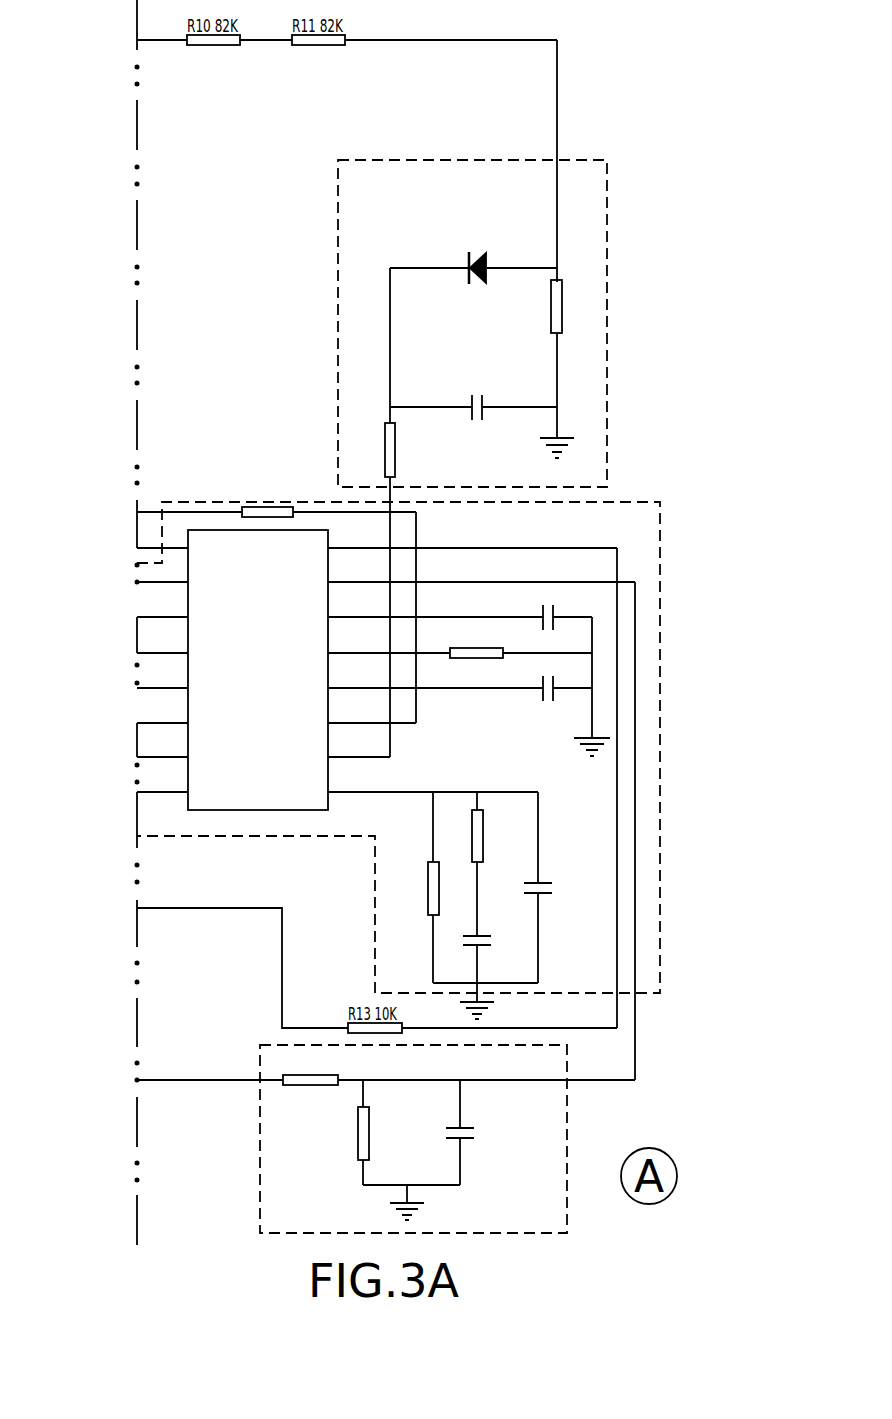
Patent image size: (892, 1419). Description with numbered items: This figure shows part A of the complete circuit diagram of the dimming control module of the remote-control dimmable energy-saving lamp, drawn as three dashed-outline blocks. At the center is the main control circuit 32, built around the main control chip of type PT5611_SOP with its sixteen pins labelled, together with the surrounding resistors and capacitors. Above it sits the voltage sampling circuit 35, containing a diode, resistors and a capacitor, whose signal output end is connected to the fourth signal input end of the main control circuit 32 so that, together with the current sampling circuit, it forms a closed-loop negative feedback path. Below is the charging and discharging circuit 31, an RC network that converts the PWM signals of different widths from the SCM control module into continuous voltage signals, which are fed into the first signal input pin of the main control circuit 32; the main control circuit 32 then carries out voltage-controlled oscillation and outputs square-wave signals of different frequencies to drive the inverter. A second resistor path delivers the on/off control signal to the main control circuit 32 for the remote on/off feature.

The charging and discharging circuit 31 is at (258, 1197).
The main control circuit 32 is at (632, 500).
The voltage sampling circuit 35 is at (497, 160).